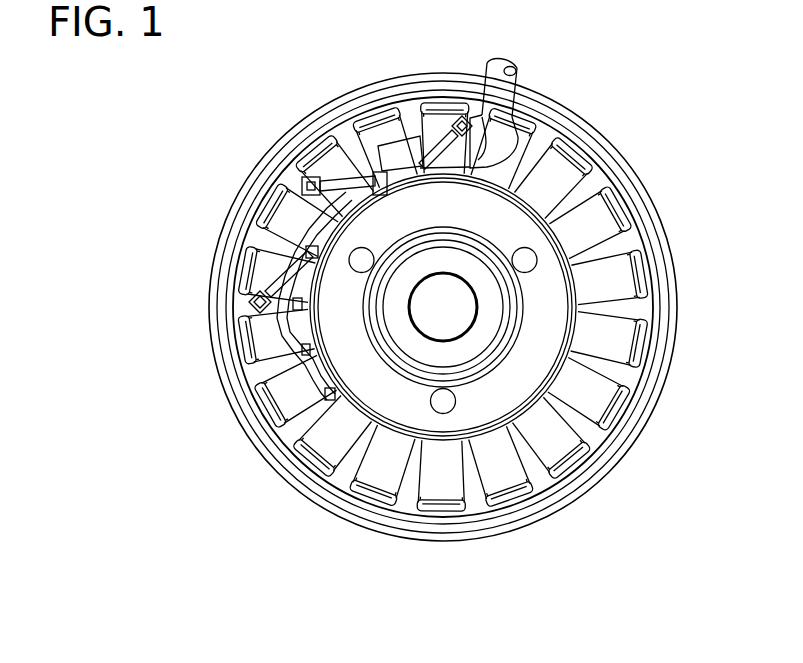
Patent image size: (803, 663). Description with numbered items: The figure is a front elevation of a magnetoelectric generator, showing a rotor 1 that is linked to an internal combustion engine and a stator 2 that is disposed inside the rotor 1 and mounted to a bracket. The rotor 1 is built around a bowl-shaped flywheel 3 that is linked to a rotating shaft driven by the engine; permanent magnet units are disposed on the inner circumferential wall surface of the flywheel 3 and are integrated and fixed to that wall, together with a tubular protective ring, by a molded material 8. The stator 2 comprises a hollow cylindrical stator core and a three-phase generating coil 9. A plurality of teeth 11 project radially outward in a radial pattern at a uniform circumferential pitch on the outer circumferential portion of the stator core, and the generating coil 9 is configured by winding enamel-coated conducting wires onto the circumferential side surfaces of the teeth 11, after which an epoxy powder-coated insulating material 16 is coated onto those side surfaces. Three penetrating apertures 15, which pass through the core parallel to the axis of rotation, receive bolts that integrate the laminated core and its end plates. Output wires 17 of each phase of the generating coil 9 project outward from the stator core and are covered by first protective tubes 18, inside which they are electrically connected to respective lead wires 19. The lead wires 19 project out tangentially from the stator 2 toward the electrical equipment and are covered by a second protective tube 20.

The rotor 1 is at (562, 106).
The stator 2 is at (485, 405).
The flywheel 3 is at (587, 128).
The molded material 8 is at (517, 108).
The generating coil 9 is at (327, 433).
The teeth 11 is at (369, 120).
The penetrating apertures 15 is at (446, 401).
The insulating material 16 is at (561, 442).
The output wires 17 is at (305, 352).
The first protective tubes 18 is at (253, 312).
The lead wires 19 is at (362, 165).
The second protective tube 20 is at (488, 130).